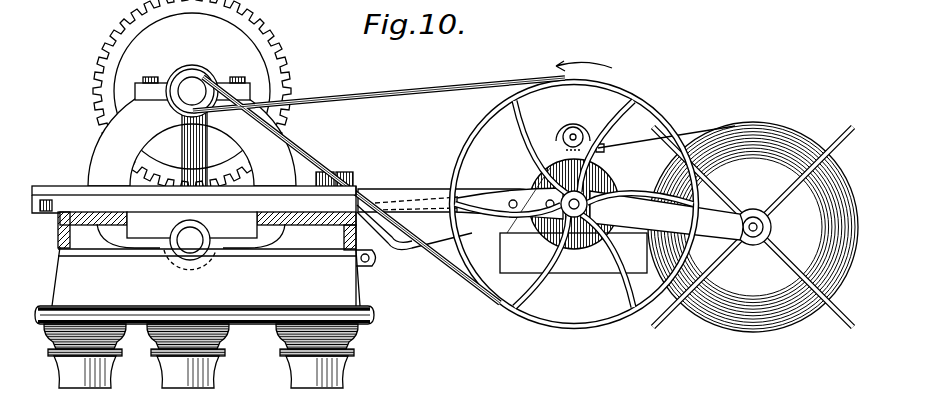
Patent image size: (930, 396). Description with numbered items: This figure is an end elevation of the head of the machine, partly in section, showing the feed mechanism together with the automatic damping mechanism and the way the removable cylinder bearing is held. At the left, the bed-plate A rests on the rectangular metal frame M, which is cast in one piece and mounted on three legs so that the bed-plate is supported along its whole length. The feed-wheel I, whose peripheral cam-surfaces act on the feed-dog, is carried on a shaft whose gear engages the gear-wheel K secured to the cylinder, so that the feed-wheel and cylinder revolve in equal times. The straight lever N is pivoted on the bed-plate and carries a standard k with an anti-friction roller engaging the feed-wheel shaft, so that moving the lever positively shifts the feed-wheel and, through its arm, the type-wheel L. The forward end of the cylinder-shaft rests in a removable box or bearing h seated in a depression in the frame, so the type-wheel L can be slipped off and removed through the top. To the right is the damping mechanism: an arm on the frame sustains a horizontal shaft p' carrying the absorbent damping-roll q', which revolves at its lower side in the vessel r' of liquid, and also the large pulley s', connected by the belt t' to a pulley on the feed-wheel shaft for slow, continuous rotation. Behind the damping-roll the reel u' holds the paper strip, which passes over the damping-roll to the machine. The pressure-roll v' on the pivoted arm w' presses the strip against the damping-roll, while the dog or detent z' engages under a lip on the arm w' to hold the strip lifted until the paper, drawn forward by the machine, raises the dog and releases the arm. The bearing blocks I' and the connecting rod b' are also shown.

The feed-wheel I is at (192, 95).
The bearing blocks of gear shaft I' is at (197, 113).
The standard k is at (191, 142).
The gear-wheel secured to the cylinder K is at (135, 188).
The lever N is at (56, 189).
The bed-plate A is at (194, 246).
The type-wheel L is at (191, 230).
The box or bearing h is at (197, 243).
The rectangular metal frame M is at (205, 317).
The belt t' is at (379, 183).
The dog or detent z' is at (425, 204).
The large pulley s' is at (573, 202).
The pivoted arm w' is at (510, 192).
The pressure-roll v' is at (576, 127).
The damping-roll q' is at (632, 187).
The vessel r' is at (573, 253).
The horizontal shaft p' is at (579, 244).
The connecting rod b' is at (666, 215).
The reel u' is at (753, 227).